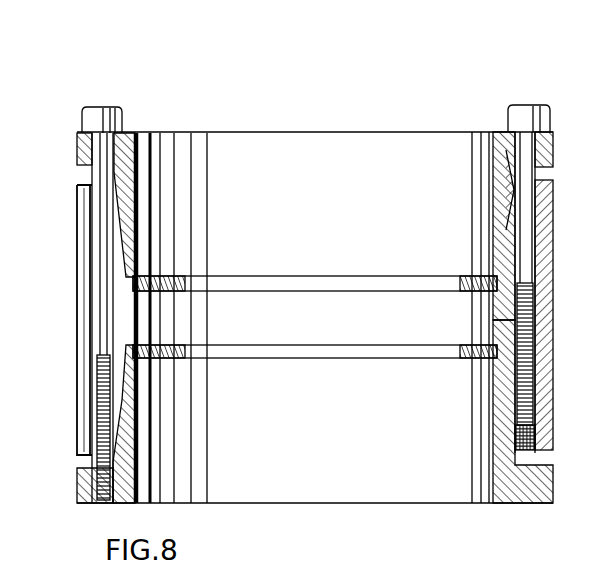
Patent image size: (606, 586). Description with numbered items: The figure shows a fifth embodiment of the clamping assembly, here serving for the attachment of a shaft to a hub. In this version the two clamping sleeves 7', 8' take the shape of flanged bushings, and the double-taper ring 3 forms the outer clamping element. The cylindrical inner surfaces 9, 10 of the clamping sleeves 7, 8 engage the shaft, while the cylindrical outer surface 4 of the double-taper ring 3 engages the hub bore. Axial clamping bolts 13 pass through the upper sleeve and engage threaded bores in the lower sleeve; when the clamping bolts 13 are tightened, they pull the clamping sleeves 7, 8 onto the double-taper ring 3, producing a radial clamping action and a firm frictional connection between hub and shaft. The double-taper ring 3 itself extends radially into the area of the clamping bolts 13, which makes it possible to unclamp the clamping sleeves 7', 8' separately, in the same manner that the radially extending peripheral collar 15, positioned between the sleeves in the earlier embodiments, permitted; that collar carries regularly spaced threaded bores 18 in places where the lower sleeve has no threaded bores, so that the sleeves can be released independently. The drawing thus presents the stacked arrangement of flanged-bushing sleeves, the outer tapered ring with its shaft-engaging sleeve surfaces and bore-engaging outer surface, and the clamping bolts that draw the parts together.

The clamping bolts 13 is at (108, 118).
The double-taper ring 3 is at (85, 247).
The clamping sleeve 7 is at (158, 205).
The clamping sleeve 8 is at (157, 424).
The cylindrical inner surface 9 is at (494, 178).
The cylindrical inner surface 10 is at (495, 459).
The peripheral collar 15 is at (499, 318).
The clamping sleeve 7' is at (556, 279).
The cylindrical outer surface 4 is at (602, 226).
The threaded bores 18 is at (554, 443).
The clamping sleeve 8' is at (594, 485).